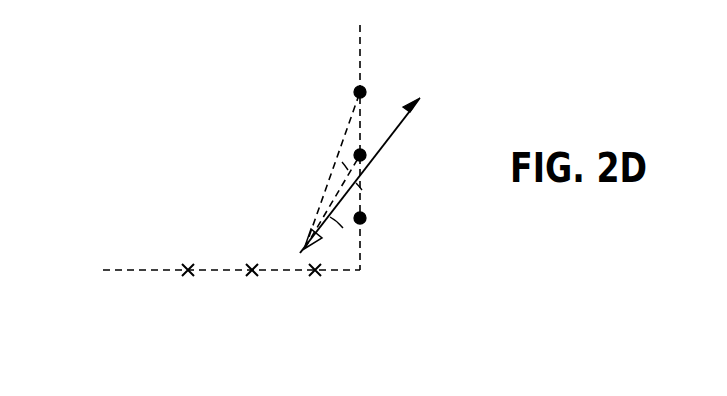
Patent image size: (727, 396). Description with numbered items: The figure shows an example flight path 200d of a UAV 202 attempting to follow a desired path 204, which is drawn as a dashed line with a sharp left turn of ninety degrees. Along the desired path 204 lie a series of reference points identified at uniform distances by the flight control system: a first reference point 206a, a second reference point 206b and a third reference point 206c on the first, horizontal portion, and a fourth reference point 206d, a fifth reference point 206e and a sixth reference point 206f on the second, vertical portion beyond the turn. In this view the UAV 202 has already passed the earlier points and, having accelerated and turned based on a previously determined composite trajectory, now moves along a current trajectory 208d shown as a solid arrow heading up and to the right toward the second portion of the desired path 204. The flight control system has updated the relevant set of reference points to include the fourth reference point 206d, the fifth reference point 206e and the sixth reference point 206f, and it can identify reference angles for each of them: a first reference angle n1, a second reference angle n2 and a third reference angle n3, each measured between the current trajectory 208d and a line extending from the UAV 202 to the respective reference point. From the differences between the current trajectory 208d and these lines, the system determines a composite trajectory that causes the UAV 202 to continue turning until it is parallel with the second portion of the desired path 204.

The flight path 200d is at (137, 122).
The UAV 202 is at (318, 242).
The desired path 204 is at (362, 42).
The first reference point 206a is at (190, 275).
The second reference point 206b is at (253, 266).
The third reference point 206c is at (316, 275).
The fourth reference point 206d is at (368, 218).
The fifth reference point 206e is at (355, 153).
The sixth reference point 206f is at (353, 92).
The current trajectory 208d is at (396, 132).
The first reference angle n1 is at (334, 211).
The second reference angle n2 is at (358, 182).
The third reference angle n3 is at (347, 164).